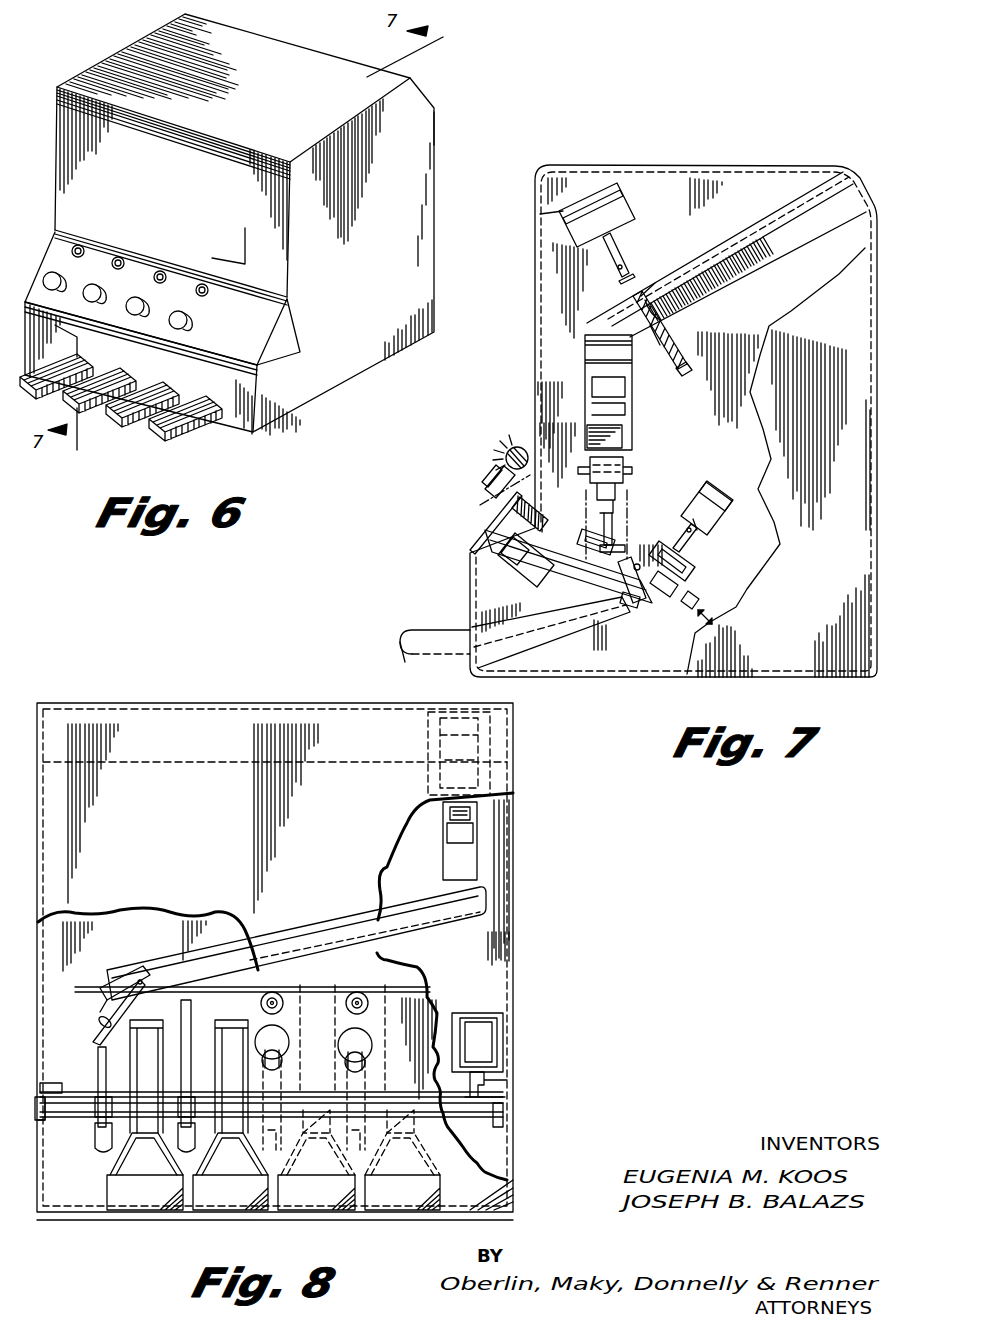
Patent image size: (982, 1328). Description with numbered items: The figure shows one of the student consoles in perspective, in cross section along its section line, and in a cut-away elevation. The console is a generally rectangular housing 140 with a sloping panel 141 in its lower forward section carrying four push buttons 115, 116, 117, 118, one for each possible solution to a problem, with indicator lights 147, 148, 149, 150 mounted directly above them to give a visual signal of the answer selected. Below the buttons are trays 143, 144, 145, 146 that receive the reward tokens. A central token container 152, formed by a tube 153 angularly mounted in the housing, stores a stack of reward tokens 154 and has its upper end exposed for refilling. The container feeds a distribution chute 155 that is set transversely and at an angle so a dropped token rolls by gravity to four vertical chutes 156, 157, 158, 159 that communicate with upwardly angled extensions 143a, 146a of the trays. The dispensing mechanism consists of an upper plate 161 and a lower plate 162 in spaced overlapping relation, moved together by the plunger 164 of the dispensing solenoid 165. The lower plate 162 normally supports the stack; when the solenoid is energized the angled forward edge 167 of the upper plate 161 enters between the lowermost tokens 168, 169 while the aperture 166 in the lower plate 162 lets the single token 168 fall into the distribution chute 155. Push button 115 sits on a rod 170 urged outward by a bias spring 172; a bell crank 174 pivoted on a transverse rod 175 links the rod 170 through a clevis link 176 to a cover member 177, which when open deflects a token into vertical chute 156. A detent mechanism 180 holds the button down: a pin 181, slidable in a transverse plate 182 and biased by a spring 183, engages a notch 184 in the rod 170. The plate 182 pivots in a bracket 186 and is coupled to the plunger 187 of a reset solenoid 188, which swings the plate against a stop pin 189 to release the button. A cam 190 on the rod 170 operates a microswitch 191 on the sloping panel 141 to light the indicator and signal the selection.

In FIG. 6, the push button 115 is at (45, 276).
In FIG. 7, the push button 115 is at (485, 485).
In FIG. 6, the push button 116 is at (92, 303).
In FIG. 6, the push button 117 is at (135, 316).
In FIG. 8, the push button 117 is at (258, 1036).
In FIG. 6, the push button 118 is at (178, 330).
In FIG. 8, the push button 118 is at (342, 1040).
In FIG. 6, the housing 140 is at (125, 50).
In FIG. 7, the housing 140 is at (535, 274).
In FIG. 8, the housing 140 is at (486, 898).
In FIG. 6, the sloping panel 141 is at (262, 318).
In FIG. 7, the sloping panel 141 is at (478, 542).
In FIG. 6, the tray 143 is at (45, 393).
In FIG. 7, the tray 143 is at (405, 637).
In FIG. 8, the tray 143 is at (145, 1200).
In FIG. 7, the upwardly angled extension 143a is at (558, 630).
In FIG. 8, the upwardly angled extension 143a is at (125, 1163).
In FIG. 6, the tray 144 is at (84, 407).
In FIG. 8, the tray 144 is at (237, 1200).
In FIG. 6, the tray 145 is at (130, 422).
In FIG. 8, the tray 145 is at (322, 1200).
In FIG. 6, the tray 146 is at (178, 434).
In FIG. 8, the tray 146 is at (408, 1200).
In FIG. 8, the upwardly angled extension 146a is at (438, 1178).
In FIG. 6, the indicator light 147 is at (80, 244).
In FIG. 7, the indicator light 147 is at (514, 447).
In FIG. 6, the indicator light 148 is at (90, 221).
In FIG. 6, the indicator light 149 is at (161, 270).
In FIG. 8, the indicator light 149 is at (261, 1000).
In FIG. 6, the indicator light 150 is at (203, 283).
In FIG. 8, the indicator light 150 is at (346, 1003).
In FIG. 7, the token container 152 is at (726, 236).
In FIG. 7, the tube 153 is at (765, 264).
In FIG. 8, the tube 153 is at (443, 852).
In FIG. 7, the reward tokens 154 is at (722, 280).
In FIG. 7, the distribution chute 155 is at (585, 358).
In FIG. 8, the distribution chute 155 is at (392, 915).
In FIG. 8, the vertical chute 156 is at (148, 1076).
In FIG. 8, the vertical chute 157 is at (233, 1076).
In FIG. 8, the vertical chute 158 is at (335, 1071).
In FIG. 8, the vertical chute 159 is at (418, 962).
In FIG. 7, the upper plate 161 is at (680, 340).
In FIG. 7, the lower plate 162 is at (676, 372).
In FIG. 7, the plunger 164 is at (618, 252).
In FIG. 7, the dispensing solenoid 165 is at (618, 200).
In FIG. 8, the dispensing solenoid 165 is at (428, 758).
In FIG. 7, the aperture 166 is at (658, 348).
In FIG. 7, the angled forward edge 167 is at (672, 322).
In FIG. 7, the token 168 is at (636, 280).
In FIG. 7, the token 169 is at (650, 292).
In FIG. 7, the rod 170 is at (590, 588).
In FIG. 7, the bias spring 172 is at (495, 457).
In FIG. 7, the bell crank 174 is at (628, 545).
In FIG. 7, the rod 175 is at (636, 575).
In FIG. 8, the rod 175 is at (78, 1113).
In FIG. 7, the clevis link 176 is at (620, 510).
In FIG. 8, the clevis link 176 is at (95, 1035).
In FIG. 7, the cover member 177 is at (622, 452).
In FIG. 8, the cover member 177 is at (118, 978).
In FIG. 7, the detent mechanism 180 is at (733, 530).
In FIG. 7, the pin 181 is at (688, 603).
In FIG. 7, the plate 182 is at (690, 563).
In FIG. 8, the plate 182 is at (92, 1095).
In FIG. 7, the spring 183 is at (672, 582).
In FIG. 7, the notch 184 is at (640, 610).
In FIG. 8, the bracket 186 is at (50, 1080).
In FIG. 7, the plunger 187 is at (682, 520).
In FIG. 8, the plunger 187 is at (497, 1083).
In FIG. 7, the reset solenoid 188 is at (715, 482).
In FIG. 8, the reset solenoid 188 is at (478, 1030).
In FIG. 7, the stop pin 189 is at (695, 540).
In FIG. 7, the cam 190 is at (582, 533).
In FIG. 7, the microswitch 191 is at (518, 573).